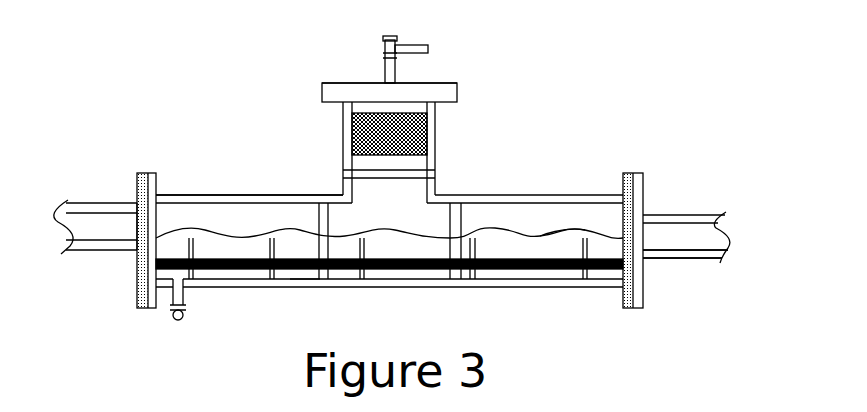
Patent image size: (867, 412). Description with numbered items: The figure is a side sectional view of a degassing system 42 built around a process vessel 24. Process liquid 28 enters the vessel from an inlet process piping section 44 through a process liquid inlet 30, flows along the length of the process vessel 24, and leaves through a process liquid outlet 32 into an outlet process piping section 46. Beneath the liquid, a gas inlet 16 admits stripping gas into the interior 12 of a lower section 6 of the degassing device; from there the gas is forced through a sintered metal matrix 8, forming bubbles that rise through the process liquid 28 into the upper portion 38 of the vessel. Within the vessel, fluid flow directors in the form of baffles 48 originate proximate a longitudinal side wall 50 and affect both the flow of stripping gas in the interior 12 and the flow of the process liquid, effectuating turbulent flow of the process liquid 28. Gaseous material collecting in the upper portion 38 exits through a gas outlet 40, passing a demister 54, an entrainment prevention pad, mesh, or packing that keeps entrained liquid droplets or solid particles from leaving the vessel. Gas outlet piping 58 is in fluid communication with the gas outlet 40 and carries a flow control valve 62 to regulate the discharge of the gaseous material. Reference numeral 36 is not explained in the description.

The lower section 6 is at (157, 276).
The sintered metal matrix 8 is at (290, 278).
The interior 12 is at (500, 275).
The gas inlet 16 is at (185, 281).
The process vessel 24 is at (200, 195).
The process liquid 28 is at (560, 237).
The process liquid inlet 30 is at (137, 249).
The process liquid outlet 32 is at (645, 263).
The liquid level 36 is at (503, 228).
The upper portion 38 is at (623, 212).
The gas outlet 40 is at (437, 122).
The degassing system 42 is at (515, 78).
The inlet process piping section 44 is at (100, 203).
The outlet process piping section 46 is at (667, 262).
The baffles 48 is at (362, 247).
The longitudinal side wall 50 is at (260, 195).
The demister 54 is at (352, 130).
The gas outlet piping 58 is at (396, 72).
The flow control valve 62 is at (385, 50).